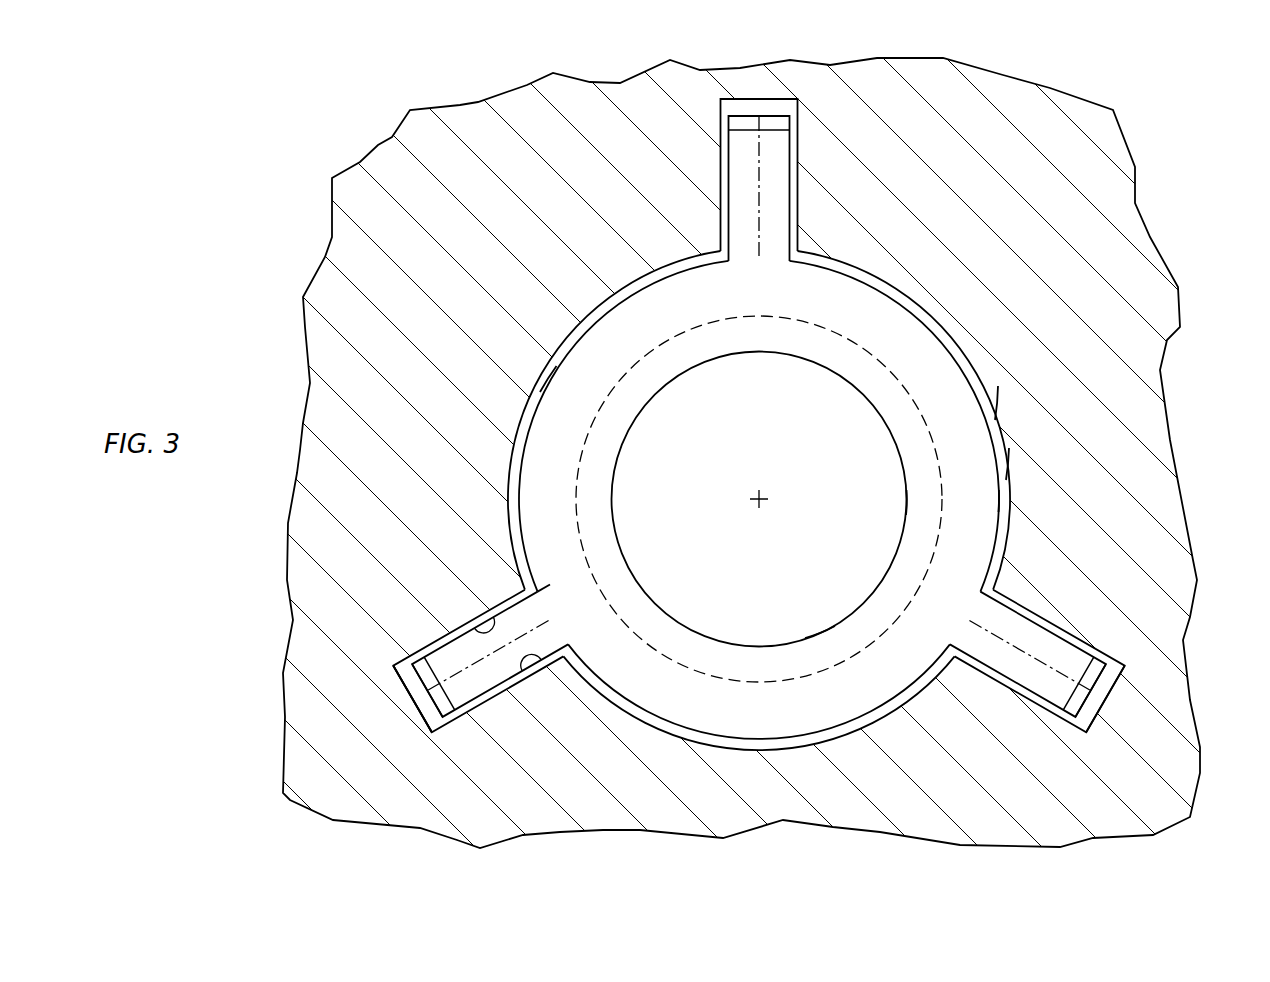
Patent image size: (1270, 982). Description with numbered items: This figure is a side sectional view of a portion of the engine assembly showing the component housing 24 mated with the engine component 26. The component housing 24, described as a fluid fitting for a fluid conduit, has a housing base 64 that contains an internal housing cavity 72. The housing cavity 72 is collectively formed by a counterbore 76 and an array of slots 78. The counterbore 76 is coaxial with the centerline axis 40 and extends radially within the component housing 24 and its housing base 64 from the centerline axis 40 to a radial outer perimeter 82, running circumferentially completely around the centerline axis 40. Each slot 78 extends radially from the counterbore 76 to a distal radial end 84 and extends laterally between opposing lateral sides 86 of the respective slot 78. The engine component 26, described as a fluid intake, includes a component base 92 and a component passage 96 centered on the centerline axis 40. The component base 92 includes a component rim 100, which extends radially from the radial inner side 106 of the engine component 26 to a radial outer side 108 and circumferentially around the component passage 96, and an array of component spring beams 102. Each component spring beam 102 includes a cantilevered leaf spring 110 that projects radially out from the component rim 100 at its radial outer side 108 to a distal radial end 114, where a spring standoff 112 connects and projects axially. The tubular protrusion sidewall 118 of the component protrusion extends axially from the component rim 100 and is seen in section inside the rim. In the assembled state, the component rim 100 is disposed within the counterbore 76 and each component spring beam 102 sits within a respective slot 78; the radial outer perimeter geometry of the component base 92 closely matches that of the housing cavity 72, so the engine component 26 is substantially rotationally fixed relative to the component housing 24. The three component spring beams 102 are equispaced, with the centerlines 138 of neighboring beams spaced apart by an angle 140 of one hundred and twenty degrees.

The component housing 24 is at (635, 491).
The engine component 26 is at (1001, 437).
The centerline axis 40 is at (757, 499).
The housing base 64 is at (1001, 197).
The housing cavity 72 is at (972, 341).
The counterbore 76 is at (926, 306).
The slot 78 is at (778, 108).
The radial outer perimeter 82 is at (556, 366).
The distal radial end 84 is at (427, 712).
The lateral side 86 is at (488, 615).
The component base 92 is at (988, 400).
The component passage 96 is at (751, 458).
The component rim 100 is at (815, 625).
The component spring beam 102 is at (798, 143).
The radial inner side 106 is at (904, 500).
The radial outer side 108 is at (1008, 502).
The cantilevered leaf spring 110 is at (757, 220).
The spring standoff 112 is at (740, 125).
The distal radial end 114 is at (417, 688).
The tubular protrusion sidewall 118 is at (678, 623).
The centerline 138 is at (762, 186).
The angle 140 is at (513, 637).